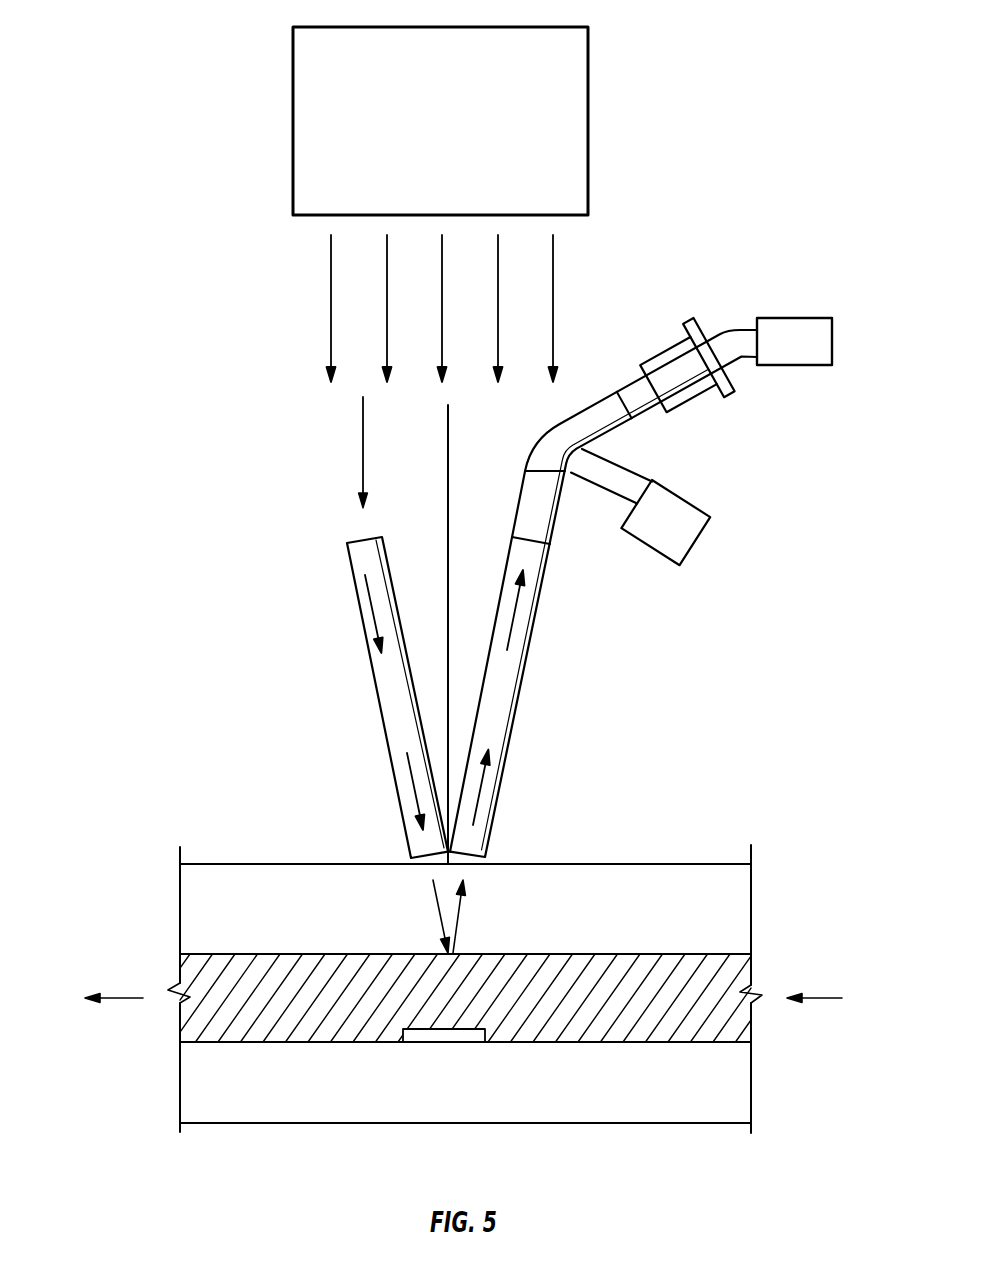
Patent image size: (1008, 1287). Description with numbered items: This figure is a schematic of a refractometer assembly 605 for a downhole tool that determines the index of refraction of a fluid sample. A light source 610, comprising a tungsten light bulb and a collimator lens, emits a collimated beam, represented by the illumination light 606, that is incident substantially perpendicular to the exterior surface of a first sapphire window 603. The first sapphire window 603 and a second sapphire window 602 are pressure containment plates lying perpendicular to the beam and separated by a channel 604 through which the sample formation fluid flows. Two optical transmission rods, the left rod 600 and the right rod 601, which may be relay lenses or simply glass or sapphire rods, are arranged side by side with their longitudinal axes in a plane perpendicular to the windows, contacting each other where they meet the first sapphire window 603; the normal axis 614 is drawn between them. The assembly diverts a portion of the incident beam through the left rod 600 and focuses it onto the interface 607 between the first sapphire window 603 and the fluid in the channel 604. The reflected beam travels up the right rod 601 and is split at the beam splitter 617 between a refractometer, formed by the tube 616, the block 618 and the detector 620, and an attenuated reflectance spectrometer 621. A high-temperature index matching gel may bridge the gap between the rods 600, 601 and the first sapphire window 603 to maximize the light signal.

The left rod 600 is at (378, 697).
The right rod 601 is at (517, 702).
The second sapphire window 602 is at (255, 1108).
The first sapphire window 603 is at (267, 876).
The channel 604 is at (273, 963).
The refractometer assembly 605 is at (248, 547).
The illumination light 606 is at (447, 438).
The interface 607 is at (609, 953).
The light source 610 is at (293, 110).
The surface normal axis 614 is at (543, 436).
The refractometer component 616 is at (646, 414).
The beam splitter 617 is at (590, 486).
The refractometer component 618 is at (663, 351).
The refractometer component 620 is at (790, 318).
The attenuated reflectance spectrometer 621 is at (695, 502).